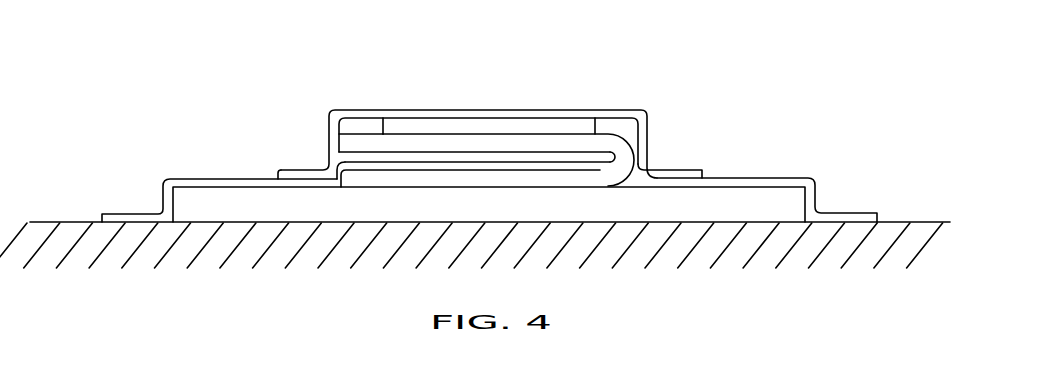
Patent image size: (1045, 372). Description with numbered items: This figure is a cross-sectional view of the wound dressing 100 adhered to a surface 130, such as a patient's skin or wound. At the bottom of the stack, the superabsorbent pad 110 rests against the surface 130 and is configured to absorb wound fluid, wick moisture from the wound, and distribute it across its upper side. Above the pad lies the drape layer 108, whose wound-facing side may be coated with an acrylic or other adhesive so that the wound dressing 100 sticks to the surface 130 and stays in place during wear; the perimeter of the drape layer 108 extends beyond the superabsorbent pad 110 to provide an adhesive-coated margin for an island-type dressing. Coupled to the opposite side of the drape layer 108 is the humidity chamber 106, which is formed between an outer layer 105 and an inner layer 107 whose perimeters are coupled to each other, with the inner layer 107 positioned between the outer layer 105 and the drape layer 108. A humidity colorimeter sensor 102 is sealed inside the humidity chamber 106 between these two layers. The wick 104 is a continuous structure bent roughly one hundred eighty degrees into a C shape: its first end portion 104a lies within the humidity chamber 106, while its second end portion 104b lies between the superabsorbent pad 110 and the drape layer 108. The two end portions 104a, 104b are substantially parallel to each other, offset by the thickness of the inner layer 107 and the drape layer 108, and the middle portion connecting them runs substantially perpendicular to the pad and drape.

The wound dressing 100 is at (170, 75).
The humidity colorimeter sensor 102 is at (575, 128).
The wick 104 is at (620, 154).
The first end portion 104a is at (367, 146).
The second end portion 104b is at (367, 180).
The outer layer 105 is at (438, 113).
The humidity chamber 106 is at (358, 131).
The inner layer 107 is at (493, 160).
The drape layer 108 is at (732, 184).
The superabsorbent pad 110 is at (193, 203).
The surface 130 is at (935, 220).